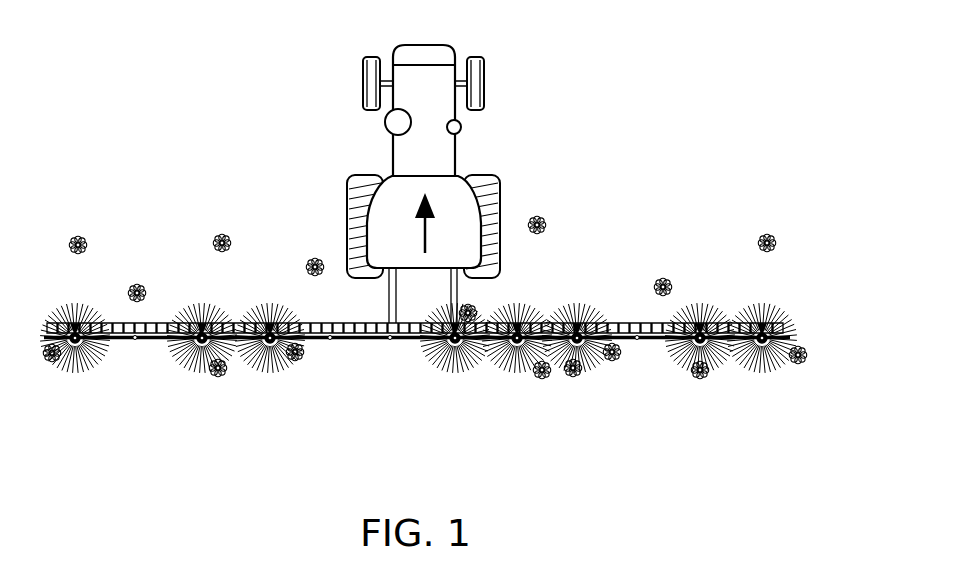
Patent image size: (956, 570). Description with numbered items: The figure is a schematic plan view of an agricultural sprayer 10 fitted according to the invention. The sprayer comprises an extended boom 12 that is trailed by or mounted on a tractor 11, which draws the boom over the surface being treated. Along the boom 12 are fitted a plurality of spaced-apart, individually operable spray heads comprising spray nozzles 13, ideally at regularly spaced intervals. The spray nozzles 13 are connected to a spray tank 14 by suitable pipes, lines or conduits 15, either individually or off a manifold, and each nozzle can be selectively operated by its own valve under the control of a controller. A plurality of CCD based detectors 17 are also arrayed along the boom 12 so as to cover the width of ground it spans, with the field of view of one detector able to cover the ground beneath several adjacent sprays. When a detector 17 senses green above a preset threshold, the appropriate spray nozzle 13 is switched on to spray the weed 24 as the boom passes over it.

The agricultural sprayer 10 is at (622, 237).
The tractor 11 is at (468, 147).
The boom 12 is at (802, 325).
The spray nozzles 13 is at (643, 367).
The spray tank 14 is at (440, 307).
The pipes, lines or conduits 15 is at (378, 338).
The detector 17 is at (165, 321).
The weed 24 is at (315, 249).